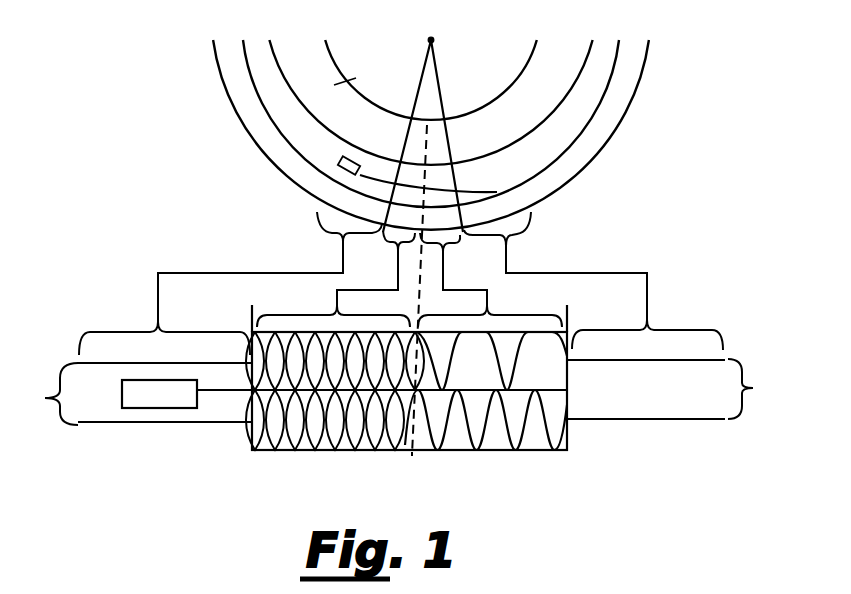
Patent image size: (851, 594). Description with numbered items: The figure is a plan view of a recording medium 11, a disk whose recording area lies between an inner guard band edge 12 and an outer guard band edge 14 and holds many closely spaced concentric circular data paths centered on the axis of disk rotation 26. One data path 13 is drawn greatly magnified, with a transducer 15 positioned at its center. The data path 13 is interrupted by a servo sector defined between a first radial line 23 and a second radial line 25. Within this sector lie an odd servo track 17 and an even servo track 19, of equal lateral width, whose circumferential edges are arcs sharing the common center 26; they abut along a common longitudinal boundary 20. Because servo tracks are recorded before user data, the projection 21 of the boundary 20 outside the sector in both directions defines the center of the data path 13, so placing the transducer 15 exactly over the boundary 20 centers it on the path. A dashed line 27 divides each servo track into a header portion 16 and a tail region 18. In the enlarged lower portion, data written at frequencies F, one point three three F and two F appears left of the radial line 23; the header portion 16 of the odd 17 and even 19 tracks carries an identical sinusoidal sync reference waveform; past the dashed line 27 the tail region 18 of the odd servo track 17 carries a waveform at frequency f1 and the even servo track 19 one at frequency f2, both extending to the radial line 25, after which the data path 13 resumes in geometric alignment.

The recording medium 11 is at (334, 85).
The inner guard band edge 12 is at (331, 56).
The data path 13 is at (307, 131).
The outer guard band edge 14 is at (258, 147).
The transducer 15 is at (160, 390).
The header portion 16 is at (281, 466).
The odd servo track 17 is at (437, 180).
The tail region 18 is at (412, 456).
The even servo track 19 is at (447, 200).
The common longitudinal boundary 20 is at (495, 191).
The projection of common longitudinal boundary 21 is at (383, 184).
The radial line 23 is at (415, 136).
The radial line 25 is at (442, 130).
The axis of disk rotation 26 is at (434, 37).
The dashed line 27 is at (421, 296).